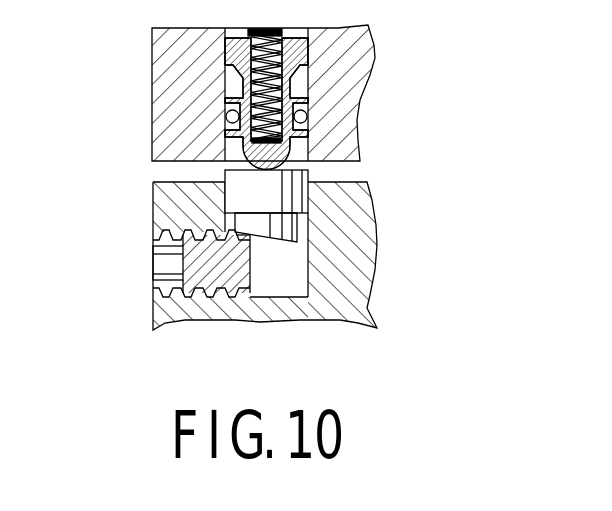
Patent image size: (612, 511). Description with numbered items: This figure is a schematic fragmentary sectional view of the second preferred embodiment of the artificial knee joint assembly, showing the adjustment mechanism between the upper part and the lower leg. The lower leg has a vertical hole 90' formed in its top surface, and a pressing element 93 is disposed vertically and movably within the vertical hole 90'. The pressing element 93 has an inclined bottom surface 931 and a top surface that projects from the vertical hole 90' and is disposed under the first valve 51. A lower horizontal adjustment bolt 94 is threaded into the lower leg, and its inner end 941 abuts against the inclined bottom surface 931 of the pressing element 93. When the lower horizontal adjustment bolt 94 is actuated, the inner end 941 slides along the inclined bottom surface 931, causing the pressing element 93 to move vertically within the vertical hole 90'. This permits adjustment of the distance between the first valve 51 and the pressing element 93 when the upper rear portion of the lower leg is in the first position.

The first valve 51 is at (258, 158).
The vertical hole 90' is at (309, 256).
The pressing element 93 is at (282, 199).
The inclined bottom surface 931 is at (284, 238).
The lower horizontal adjustment bolt 94 is at (153, 241).
The inner end 941 is at (242, 262).